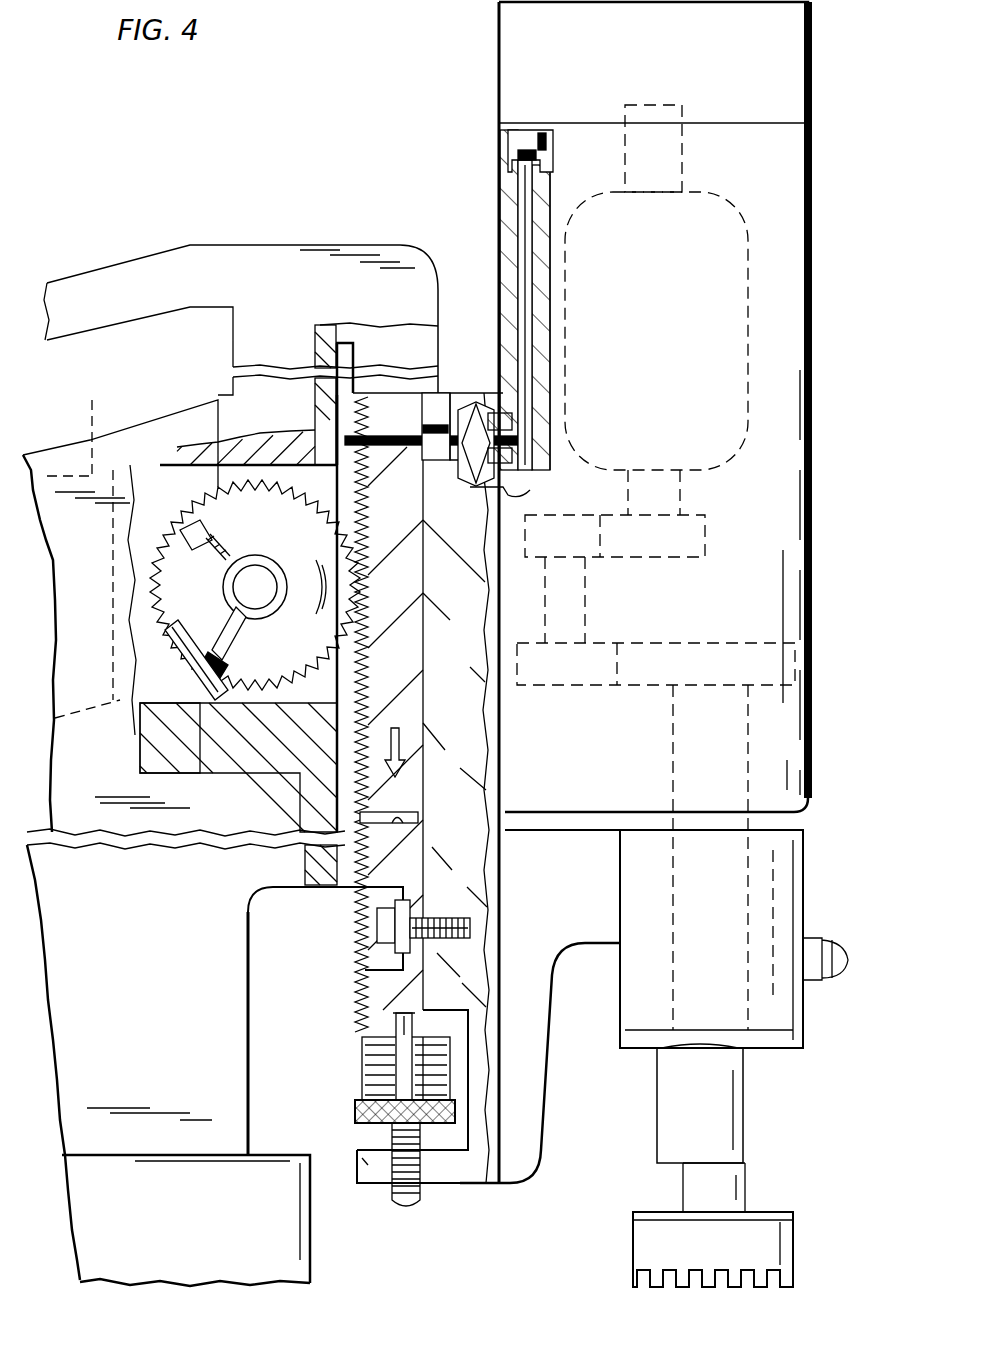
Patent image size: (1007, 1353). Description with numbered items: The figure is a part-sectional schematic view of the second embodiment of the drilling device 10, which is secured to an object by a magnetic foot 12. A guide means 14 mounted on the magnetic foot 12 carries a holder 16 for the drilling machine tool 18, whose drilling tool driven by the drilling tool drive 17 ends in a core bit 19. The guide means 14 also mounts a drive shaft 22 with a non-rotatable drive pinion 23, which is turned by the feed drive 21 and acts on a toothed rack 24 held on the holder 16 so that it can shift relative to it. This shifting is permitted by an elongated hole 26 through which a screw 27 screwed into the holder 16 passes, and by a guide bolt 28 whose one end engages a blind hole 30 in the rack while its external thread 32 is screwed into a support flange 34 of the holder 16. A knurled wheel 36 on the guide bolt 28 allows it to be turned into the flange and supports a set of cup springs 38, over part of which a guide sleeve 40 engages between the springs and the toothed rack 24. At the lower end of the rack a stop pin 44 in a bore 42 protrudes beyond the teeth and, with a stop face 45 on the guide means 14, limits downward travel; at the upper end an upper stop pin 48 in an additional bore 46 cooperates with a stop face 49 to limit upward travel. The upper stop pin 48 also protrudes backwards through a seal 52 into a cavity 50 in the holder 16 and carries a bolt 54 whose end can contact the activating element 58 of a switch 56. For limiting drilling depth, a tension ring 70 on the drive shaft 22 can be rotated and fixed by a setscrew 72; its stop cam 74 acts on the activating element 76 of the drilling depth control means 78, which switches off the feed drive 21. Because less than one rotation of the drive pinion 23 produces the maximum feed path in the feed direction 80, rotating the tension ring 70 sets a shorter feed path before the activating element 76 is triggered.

The drilling device 10 is at (475, 93).
The magnetic foot 12 is at (310, 1265).
The guide means 14 is at (248, 975).
The holder 16 is at (535, 1022).
The drilling tool drive 17 is at (735, 327).
The drilling machine tool 18 is at (797, 755).
The core bit 19 is at (795, 1230).
The feed drive 21 is at (97, 430).
The drive shaft 22 is at (268, 575).
The drive pinion 23 is at (225, 485).
The toothed rack 24 is at (385, 395).
The elongated hole 26 is at (432, 897).
The screw 27 is at (438, 937).
The guide bolt 28 is at (395, 1030).
The blind hole 30 is at (357, 992).
The external thread 32 is at (420, 1192).
The support flange 34 is at (365, 1170).
The knurled wheel 36 is at (355, 1110).
The set of cup springs 38 is at (445, 1082).
The guide sleeve 40 is at (370, 1065).
The bore 42 is at (413, 800).
The stop pin 44 is at (410, 830).
The stop face 45 is at (300, 858).
The additional bore 46 is at (320, 408).
The upper stop pin 48 is at (375, 470).
The stop face 49 is at (322, 330).
The cavity 50 is at (535, 478).
The seal 52 is at (462, 428).
The bolt 54 is at (522, 275).
The switch 56 is at (545, 135).
The activating element 58 is at (520, 158).
The tension ring 70 is at (272, 610).
The setscrew 72 is at (187, 527).
The stop cam 74 is at (246, 685).
The activating element 76 is at (176, 700).
The drilling depth control means 78 is at (160, 628).
The feed direction 80 is at (400, 742).